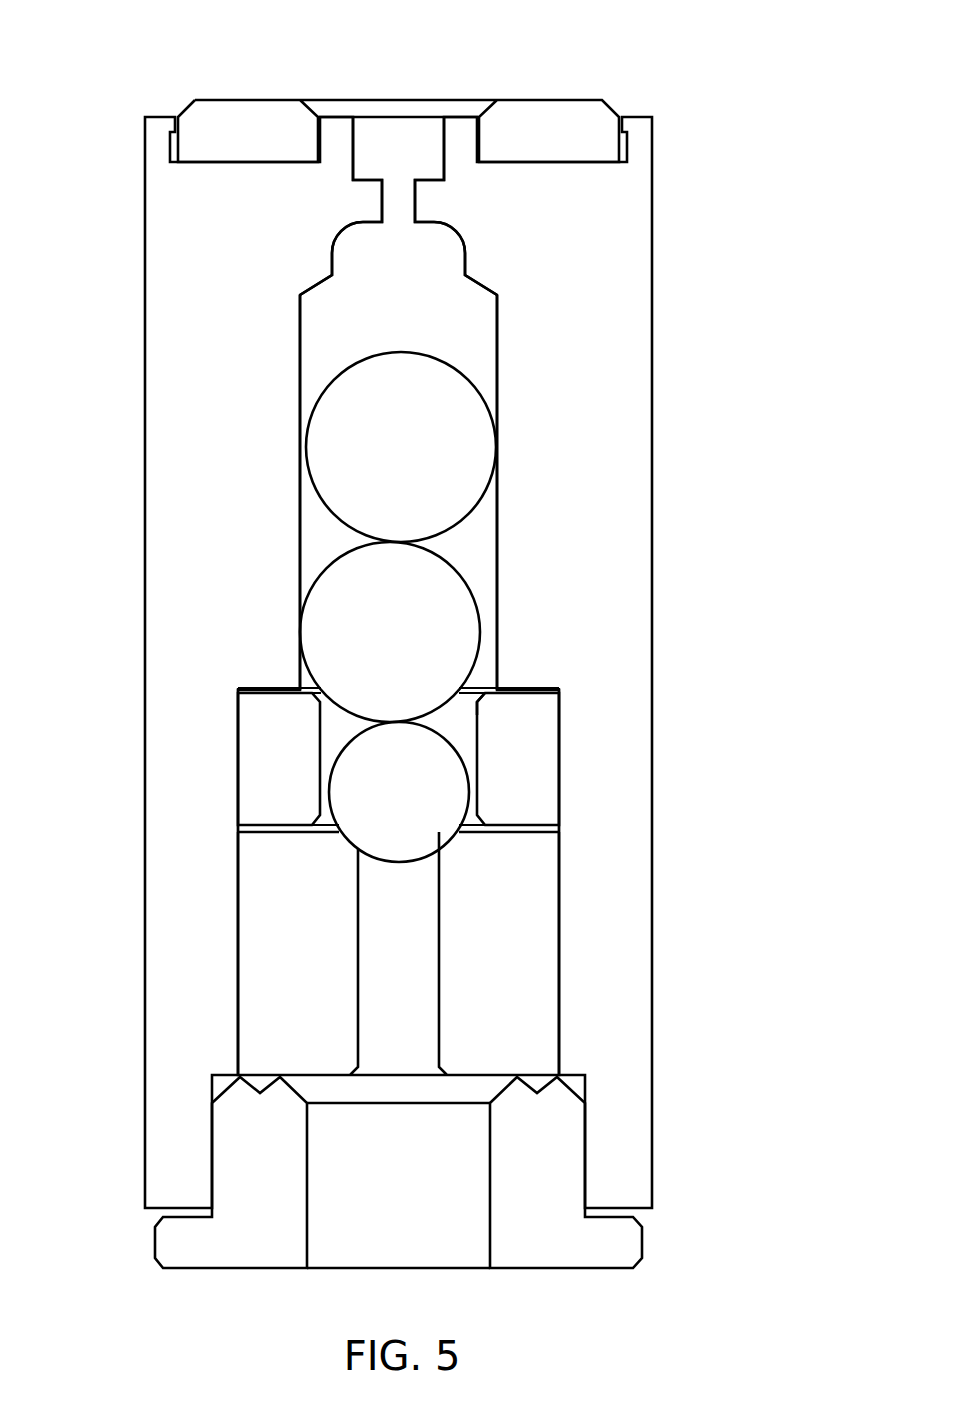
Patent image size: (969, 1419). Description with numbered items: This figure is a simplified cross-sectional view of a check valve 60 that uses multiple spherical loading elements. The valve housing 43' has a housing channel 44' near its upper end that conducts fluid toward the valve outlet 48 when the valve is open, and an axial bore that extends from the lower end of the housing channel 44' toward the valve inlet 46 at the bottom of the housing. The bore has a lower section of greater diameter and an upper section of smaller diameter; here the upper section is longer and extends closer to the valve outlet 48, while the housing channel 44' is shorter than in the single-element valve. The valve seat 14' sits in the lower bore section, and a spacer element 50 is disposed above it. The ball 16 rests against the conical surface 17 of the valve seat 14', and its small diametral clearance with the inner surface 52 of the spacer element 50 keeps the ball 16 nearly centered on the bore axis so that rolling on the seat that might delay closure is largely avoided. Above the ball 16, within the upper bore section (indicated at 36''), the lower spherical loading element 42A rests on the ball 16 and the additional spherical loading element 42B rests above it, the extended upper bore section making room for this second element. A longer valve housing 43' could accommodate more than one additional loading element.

The check valve 60 is at (784, 224).
The valve outlet 48 is at (424, 90).
The valve housing 43' is at (364, 662).
The housing channel 44' is at (398, 206).
The additional spherical loading element 42B is at (378, 461).
The lower spherical loading element 42A is at (364, 646).
The valve chamber 36'' is at (398, 492).
The inner surface 52 is at (464, 727).
The spacer element 50 is at (236, 759).
The ball 16 is at (412, 806).
The conical surface 17 is at (432, 833).
The valve seat 14' is at (368, 953).
The valve inlet 46 is at (363, 1285).